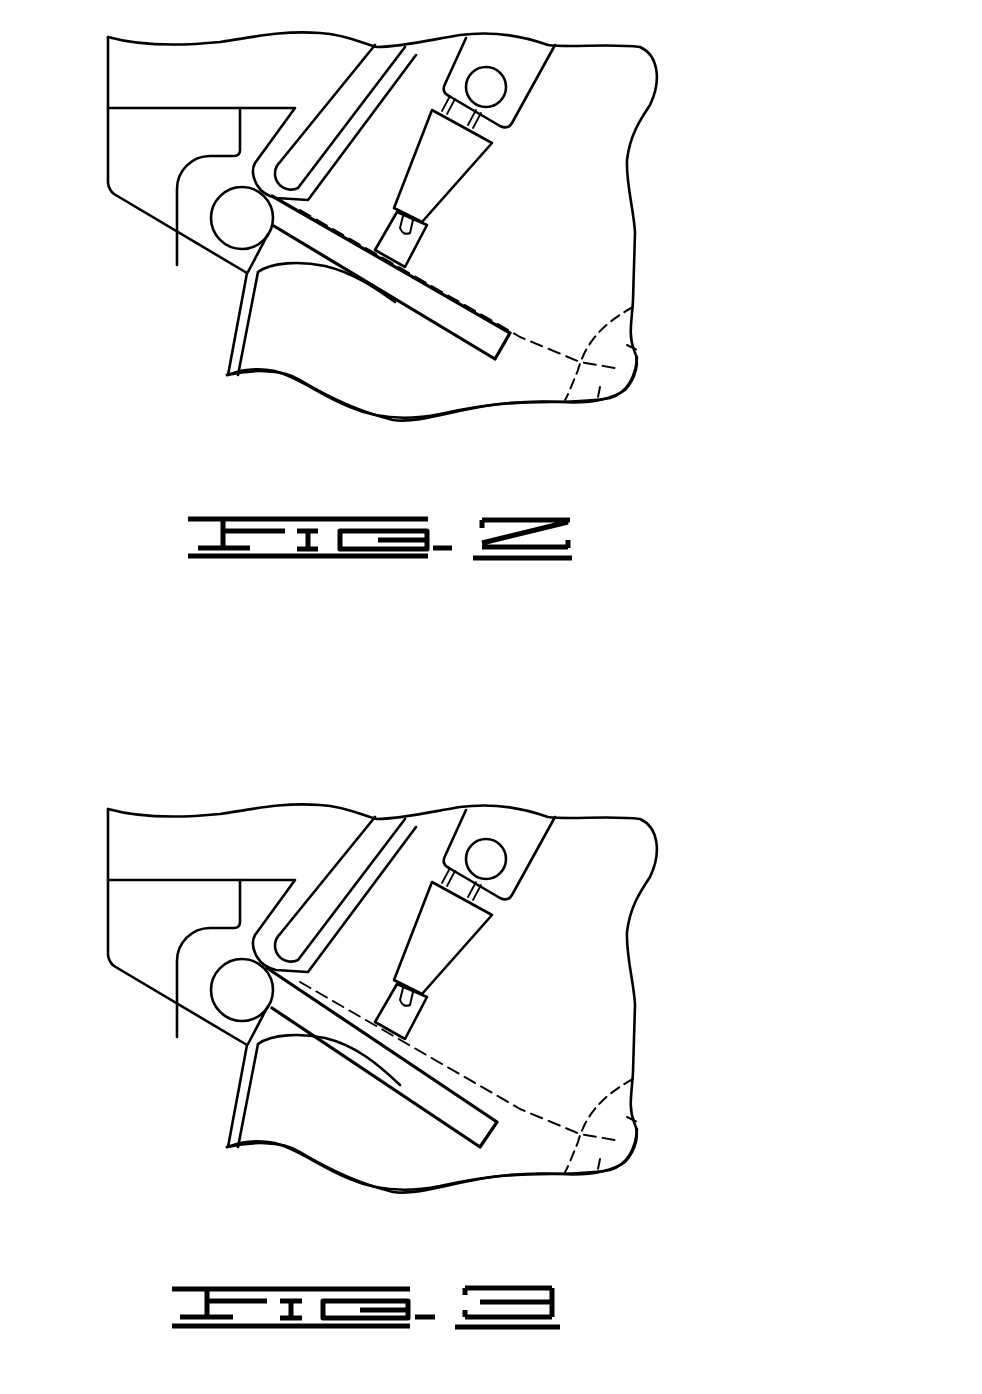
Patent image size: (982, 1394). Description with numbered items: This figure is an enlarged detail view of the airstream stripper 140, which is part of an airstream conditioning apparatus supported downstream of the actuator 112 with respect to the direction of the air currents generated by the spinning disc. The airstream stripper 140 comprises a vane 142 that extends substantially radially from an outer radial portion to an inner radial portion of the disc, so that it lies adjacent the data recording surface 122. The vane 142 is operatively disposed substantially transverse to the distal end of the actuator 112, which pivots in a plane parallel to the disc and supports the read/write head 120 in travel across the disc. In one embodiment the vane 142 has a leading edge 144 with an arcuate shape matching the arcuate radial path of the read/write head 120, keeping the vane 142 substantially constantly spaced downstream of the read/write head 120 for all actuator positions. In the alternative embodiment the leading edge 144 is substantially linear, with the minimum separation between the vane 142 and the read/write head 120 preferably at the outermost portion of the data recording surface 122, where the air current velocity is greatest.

In FIG. 2, the actuator 112 is at (527, 108).
In FIG. 3, the actuator 112 is at (527, 880).
In FIG. 2, the read/write head 120 is at (418, 251).
In FIG. 3, the read/write head 120 is at (415, 1023).
In FIG. 2, the data recording surface 122 is at (462, 390).
In FIG. 3, the data recording surface 122 is at (277, 1122).
In FIG. 2, the airstream stripper 140 is at (215, 268).
In FIG. 3, the airstream stripper 140 is at (217, 1028).
In FIG. 2, the vane 142 is at (385, 280).
In FIG. 3, the vane 142 is at (397, 1085).
In FIG. 2, the leading edge 144 is at (445, 300).
In FIG. 3, the leading edge 144 is at (452, 1093).